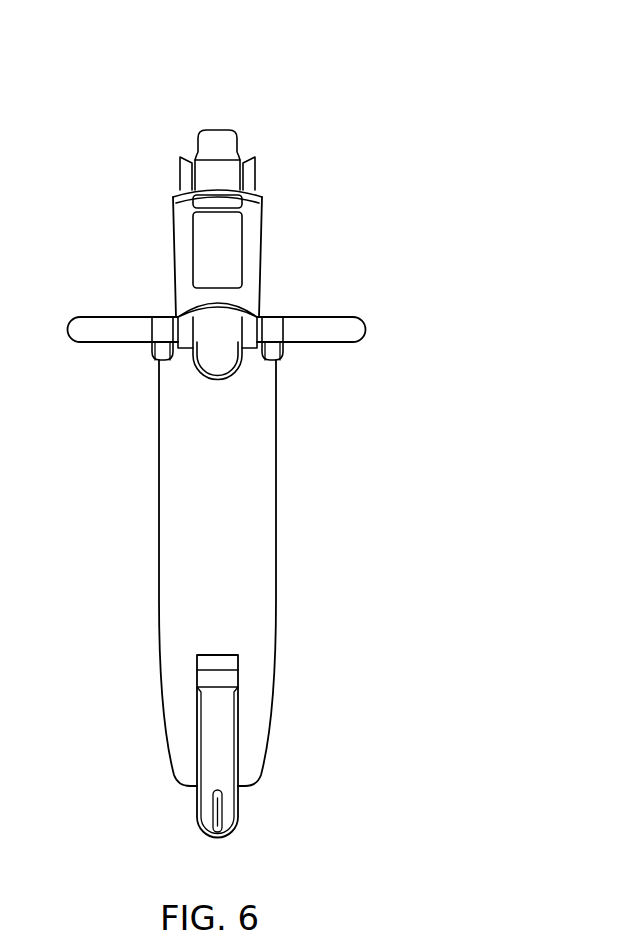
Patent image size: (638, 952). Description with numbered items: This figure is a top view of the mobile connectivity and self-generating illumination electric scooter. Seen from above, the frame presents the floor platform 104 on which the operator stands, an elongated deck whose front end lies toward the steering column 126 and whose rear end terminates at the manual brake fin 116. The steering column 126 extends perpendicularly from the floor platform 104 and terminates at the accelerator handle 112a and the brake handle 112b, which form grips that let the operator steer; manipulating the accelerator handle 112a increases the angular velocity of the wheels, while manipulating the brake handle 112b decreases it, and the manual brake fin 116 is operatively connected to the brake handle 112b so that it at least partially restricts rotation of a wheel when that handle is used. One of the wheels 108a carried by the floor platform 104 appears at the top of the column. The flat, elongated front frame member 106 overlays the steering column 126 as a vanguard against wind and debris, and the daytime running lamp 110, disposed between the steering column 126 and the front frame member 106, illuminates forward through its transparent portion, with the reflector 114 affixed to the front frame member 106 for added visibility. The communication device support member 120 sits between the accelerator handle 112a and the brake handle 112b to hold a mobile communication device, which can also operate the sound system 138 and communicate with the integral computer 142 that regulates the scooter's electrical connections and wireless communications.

The floor platform 104 is at (160, 535).
The front frame member 106 is at (248, 213).
The wheel 108a is at (230, 138).
The daytime running lamp 110 is at (213, 237).
The accelerator handle 112a is at (272, 325).
The brake handle 112b is at (160, 318).
The reflector 114 is at (221, 197).
The manual brake fin 116 is at (232, 796).
The communication device support member 120 is at (198, 468).
The steering column 126 is at (157, 360).
The sound system 138 is at (222, 327).
The integral computer 142 is at (206, 357).